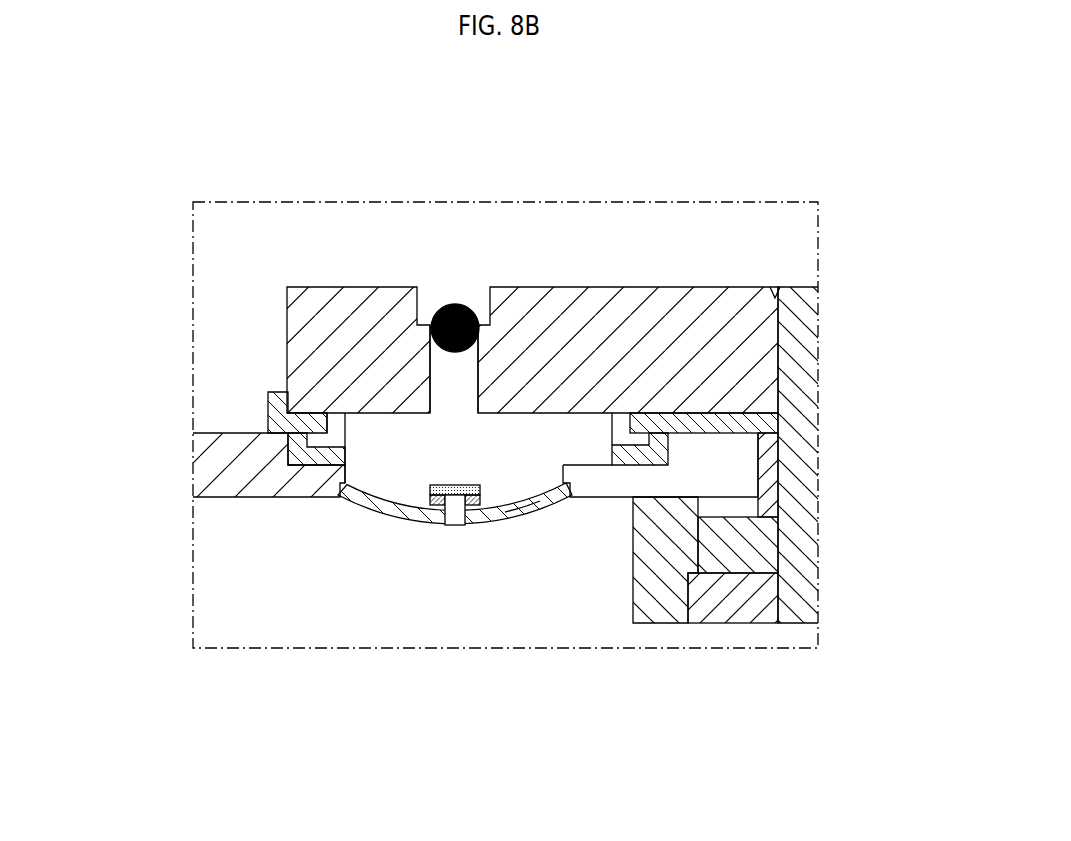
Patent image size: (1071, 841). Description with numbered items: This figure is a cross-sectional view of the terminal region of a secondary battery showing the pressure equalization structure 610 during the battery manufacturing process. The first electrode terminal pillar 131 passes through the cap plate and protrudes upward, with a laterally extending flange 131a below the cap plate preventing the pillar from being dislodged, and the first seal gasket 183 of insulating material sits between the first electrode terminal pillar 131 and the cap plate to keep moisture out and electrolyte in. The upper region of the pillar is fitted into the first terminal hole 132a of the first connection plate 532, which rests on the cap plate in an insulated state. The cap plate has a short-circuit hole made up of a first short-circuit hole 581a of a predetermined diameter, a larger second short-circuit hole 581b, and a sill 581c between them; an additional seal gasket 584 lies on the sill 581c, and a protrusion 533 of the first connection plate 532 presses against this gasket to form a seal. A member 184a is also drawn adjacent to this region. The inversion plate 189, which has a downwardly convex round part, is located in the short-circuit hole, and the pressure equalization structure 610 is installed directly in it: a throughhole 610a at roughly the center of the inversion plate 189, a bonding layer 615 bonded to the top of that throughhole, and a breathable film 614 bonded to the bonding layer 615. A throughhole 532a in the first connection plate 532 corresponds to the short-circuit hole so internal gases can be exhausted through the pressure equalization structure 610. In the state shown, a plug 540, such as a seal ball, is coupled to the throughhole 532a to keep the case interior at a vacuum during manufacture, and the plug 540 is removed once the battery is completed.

The first electrode terminal pillar 131 is at (800, 396).
The flange 131a is at (740, 555).
The first terminal hole 132a is at (800, 333).
The first seal gasket 183 is at (767, 478).
The support plate 184a is at (628, 426).
The inversion plate 189 is at (523, 508).
The first connection plate 532 is at (308, 337).
The throughhole 532a is at (466, 366).
The protrusion 533 is at (350, 437).
The plug 540 is at (445, 306).
The first short-circuit hole 581a is at (350, 477).
The second short-circuit hole 581b is at (266, 412).
The sill 581c is at (281, 467).
The additional seal gasket 584 is at (670, 442).
The pressure equalization structure 610 is at (489, 528).
The throughhole 610a is at (453, 507).
The breathable film 614 is at (479, 485).
The bonding layer 615 is at (482, 493).